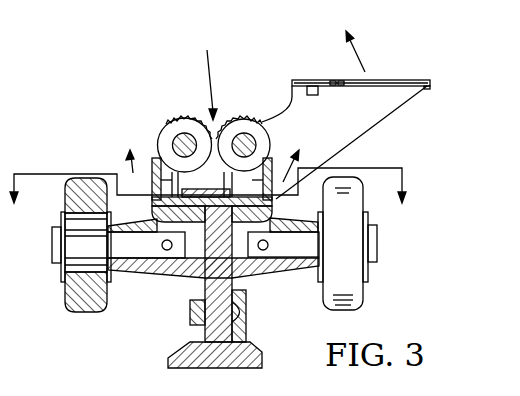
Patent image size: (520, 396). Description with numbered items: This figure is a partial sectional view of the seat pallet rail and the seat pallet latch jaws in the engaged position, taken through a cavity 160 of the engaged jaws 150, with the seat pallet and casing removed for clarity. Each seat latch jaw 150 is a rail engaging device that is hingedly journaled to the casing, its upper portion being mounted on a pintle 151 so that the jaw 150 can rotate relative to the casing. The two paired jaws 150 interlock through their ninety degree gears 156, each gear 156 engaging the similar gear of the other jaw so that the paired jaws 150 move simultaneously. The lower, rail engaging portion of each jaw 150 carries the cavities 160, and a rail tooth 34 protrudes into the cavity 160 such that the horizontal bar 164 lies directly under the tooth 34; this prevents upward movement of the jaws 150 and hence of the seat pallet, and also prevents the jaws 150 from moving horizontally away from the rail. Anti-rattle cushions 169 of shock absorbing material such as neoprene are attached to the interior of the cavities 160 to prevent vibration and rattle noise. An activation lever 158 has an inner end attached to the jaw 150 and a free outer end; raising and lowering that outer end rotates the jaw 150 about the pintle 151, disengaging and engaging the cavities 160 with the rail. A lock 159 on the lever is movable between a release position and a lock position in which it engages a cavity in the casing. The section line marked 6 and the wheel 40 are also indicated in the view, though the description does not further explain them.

The section line 6- 6 is at (207, 199).
The rail tooth 34 is at (165, 216).
The wheel 40 is at (355, 287).
The seat latch jaw 150 is at (143, 128).
The pintle 151 is at (176, 135).
The ninety degree gear 156 is at (233, 110).
The activation lever 158 is at (373, 80).
The lock 159 is at (338, 59).
The cavity 160 is at (147, 187).
The horizontal bar 164 is at (197, 270).
The anti-rattle cushion 169 is at (157, 200).